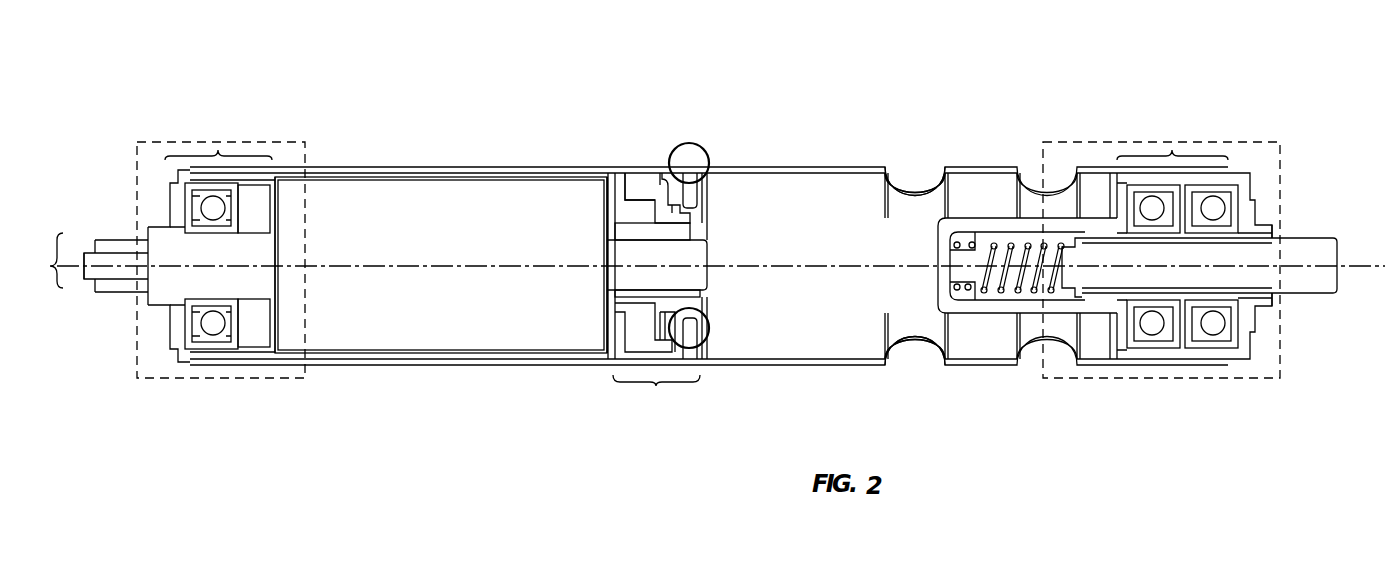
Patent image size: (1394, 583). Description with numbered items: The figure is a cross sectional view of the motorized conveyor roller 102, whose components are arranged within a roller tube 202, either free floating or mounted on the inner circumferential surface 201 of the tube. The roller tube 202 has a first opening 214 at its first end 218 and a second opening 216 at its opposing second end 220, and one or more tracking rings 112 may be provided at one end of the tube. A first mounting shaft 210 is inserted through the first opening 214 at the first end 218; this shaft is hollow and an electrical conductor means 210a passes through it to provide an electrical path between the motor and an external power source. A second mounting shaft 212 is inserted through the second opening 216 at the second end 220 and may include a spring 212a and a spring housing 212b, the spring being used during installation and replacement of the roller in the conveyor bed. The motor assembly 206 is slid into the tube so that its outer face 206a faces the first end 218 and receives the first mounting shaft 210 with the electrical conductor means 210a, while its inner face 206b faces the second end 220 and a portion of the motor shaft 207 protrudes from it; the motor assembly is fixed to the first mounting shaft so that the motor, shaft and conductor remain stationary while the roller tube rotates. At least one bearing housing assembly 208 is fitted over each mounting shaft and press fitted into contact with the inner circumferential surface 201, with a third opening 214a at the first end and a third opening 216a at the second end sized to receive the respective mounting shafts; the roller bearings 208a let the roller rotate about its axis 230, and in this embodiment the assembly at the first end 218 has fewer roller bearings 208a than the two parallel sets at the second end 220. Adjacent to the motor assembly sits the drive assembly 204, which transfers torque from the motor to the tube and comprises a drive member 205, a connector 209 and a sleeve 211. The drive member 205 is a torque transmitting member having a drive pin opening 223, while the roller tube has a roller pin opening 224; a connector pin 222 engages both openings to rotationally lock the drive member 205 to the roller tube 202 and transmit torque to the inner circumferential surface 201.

The motorized conveyor roller 102 is at (548, 55).
The tracking rings 112 is at (916, 180).
The inner circumferential surface 201 is at (659, 172).
The roller tube 202 is at (504, 162).
The drive assembly 204 is at (656, 399).
The drive member 205 is at (709, 300).
The motor assembly 206 is at (416, 332).
The outer face 206a is at (280, 216).
The inner face 206b is at (611, 164).
The motor shaft 207 is at (692, 255).
The bearing housing assembly 208 is at (216, 152).
The roller bearings 208a is at (212, 324).
The connector 209 is at (638, 312).
The first mounting shaft 210 is at (52, 264).
The electrical conductor means 210a is at (79, 276).
The sleeve 211 is at (637, 178).
The second mounting shaft 212 is at (1282, 295).
The spring 212a is at (969, 229).
The spring housing 212b is at (976, 305).
The first opening 214 is at (127, 219).
The third opening 214a is at (97, 292).
The second opening 216 is at (1262, 205).
The third opening 216a is at (1276, 330).
The first end 218 is at (171, 137).
The second end 220 is at (1193, 377).
The connector pin 222 is at (696, 346).
The drive pin opening 223 is at (660, 336).
The roller pin opening 224 is at (709, 155).
The axis 230 is at (401, 258).